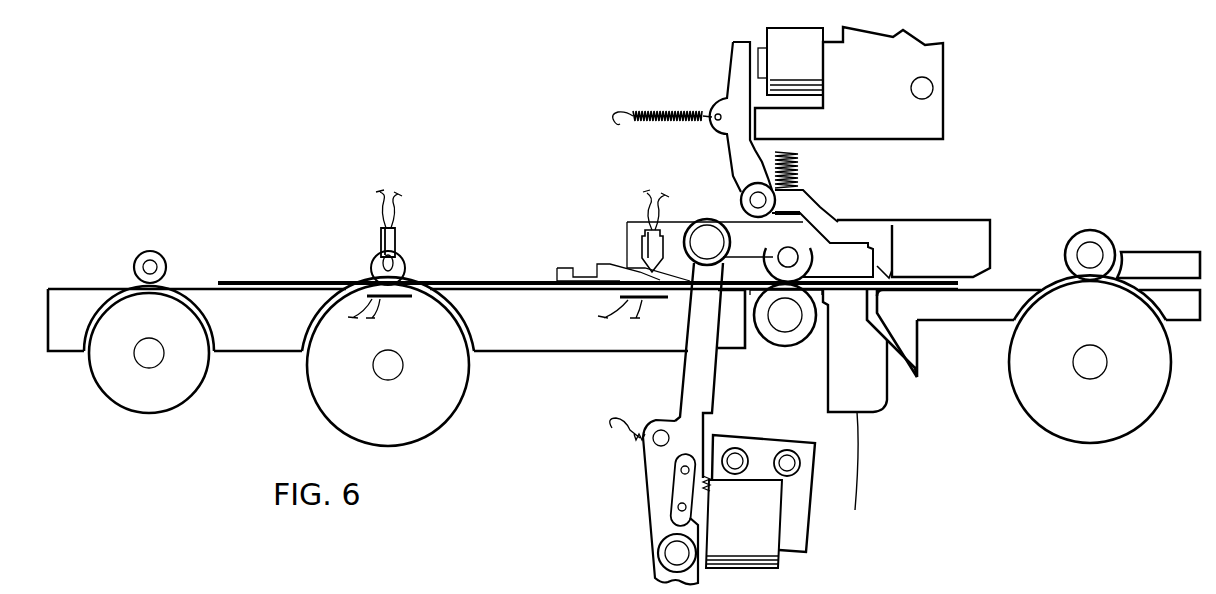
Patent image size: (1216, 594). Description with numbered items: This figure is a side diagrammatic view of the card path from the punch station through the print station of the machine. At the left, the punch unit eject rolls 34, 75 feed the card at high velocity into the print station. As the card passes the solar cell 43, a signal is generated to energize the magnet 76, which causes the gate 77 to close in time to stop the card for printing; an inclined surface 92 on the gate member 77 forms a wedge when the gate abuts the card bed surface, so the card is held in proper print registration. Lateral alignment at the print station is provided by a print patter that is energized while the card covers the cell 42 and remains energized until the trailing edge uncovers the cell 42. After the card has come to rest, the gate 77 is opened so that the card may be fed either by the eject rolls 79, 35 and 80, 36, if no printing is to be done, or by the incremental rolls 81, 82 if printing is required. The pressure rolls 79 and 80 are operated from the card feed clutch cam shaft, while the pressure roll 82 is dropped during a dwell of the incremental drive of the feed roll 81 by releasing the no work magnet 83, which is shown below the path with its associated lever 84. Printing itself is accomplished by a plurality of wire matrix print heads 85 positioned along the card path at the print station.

The punch unit eject roll 34 is at (135, 402).
The eject roll 35 is at (332, 411).
The eject roll 36 is at (1030, 411).
The solar cell 42 is at (381, 242).
The solar cell 43 is at (642, 243).
The punch unit eject roll 75 is at (150, 250).
The magnet 76 is at (768, 40).
The gate 77 is at (880, 227).
The pressure roll 79 is at (405, 266).
The pressure roll 80 is at (1097, 240).
The incremental feed roll 81 is at (794, 338).
The pressure roll 82 is at (807, 243).
The no work magnet 83 is at (775, 560).
The lever 84 is at (655, 570).
The wire matrix print head 85 is at (880, 372).
The inclined surface 92 is at (880, 273).